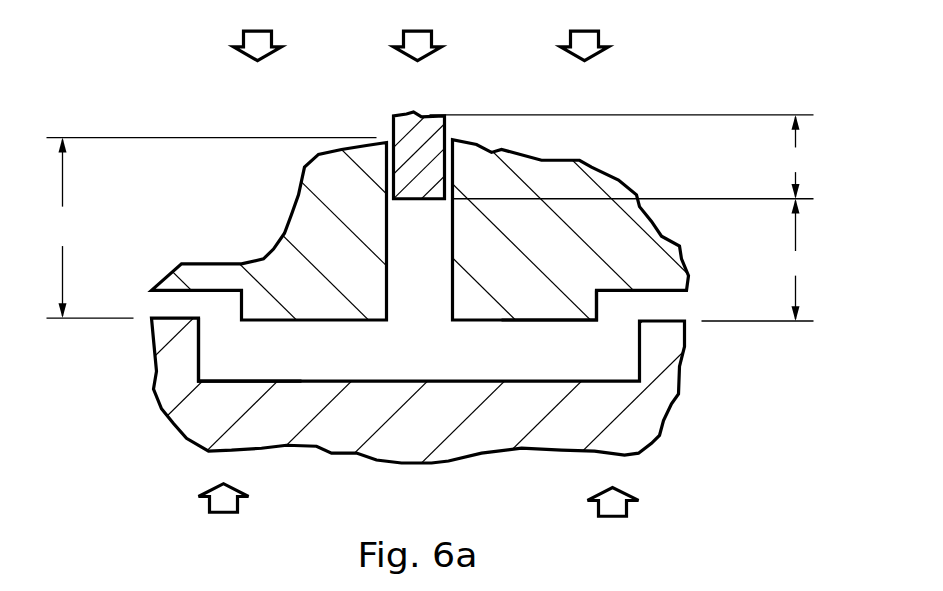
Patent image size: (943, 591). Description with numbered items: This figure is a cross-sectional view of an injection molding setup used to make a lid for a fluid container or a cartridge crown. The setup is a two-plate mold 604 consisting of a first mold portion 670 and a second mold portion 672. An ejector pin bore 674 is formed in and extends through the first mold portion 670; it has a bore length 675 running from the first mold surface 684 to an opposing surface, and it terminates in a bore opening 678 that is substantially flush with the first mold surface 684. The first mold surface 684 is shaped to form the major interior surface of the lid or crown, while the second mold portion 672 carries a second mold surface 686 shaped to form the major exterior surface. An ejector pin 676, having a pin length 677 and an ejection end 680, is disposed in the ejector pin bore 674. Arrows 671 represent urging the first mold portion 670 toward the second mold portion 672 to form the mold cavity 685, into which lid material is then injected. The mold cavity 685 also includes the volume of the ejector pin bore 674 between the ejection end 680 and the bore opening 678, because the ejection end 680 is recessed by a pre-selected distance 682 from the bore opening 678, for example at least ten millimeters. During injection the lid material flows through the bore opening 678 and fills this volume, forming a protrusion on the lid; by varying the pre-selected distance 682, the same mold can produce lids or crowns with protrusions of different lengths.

The two-plate mold 604 is at (688, 447).
The first mold portion 670 is at (560, 183).
The arrows 671 is at (271, 31).
The second mold portion 672 is at (358, 428).
The ejector pin bore 674 is at (419, 276).
The bore length 675 is at (209, 228).
The ejector pin 676 is at (408, 113).
The pin length 677 is at (623, 157).
The bore opening 678 is at (414, 323).
The ejection end 680 is at (397, 196).
The pre-selected distance 682 is at (759, 260).
The first mold surface 684 is at (533, 323).
The mold cavity 685 is at (329, 350).
The second mold surface 686 is at (223, 382).